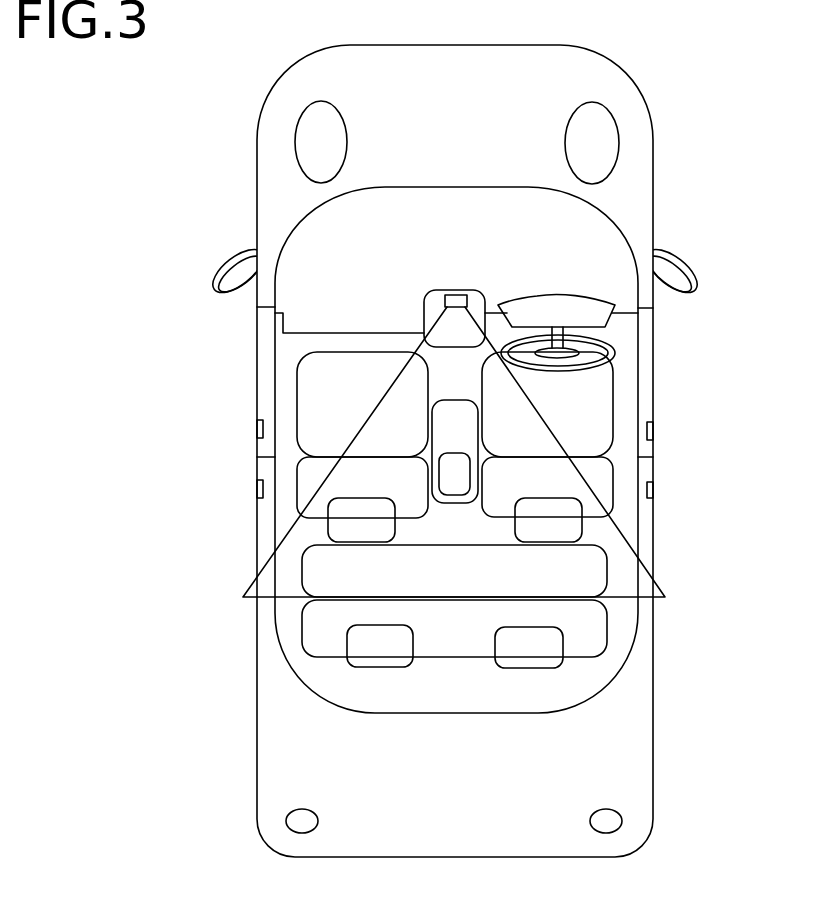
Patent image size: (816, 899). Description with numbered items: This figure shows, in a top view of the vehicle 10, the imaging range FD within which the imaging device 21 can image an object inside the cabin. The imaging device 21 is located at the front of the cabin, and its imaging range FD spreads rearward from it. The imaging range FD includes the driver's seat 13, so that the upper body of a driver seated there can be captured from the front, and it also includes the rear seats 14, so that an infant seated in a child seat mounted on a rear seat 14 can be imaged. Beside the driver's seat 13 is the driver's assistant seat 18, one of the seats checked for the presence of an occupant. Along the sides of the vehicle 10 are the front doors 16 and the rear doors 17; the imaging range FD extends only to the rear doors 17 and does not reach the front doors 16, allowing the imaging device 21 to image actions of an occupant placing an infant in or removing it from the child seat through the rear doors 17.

The vehicle 10 is at (637, 181).
The driver's seat 13 is at (585, 424).
The rear seats 14 is at (585, 630).
The front doors 16 is at (265, 376).
The rear doors 17 is at (265, 513).
The driver's assistant seat 18 is at (327, 427).
The imaging device 21 is at (486, 297).
The imaging range FD is at (617, 527).